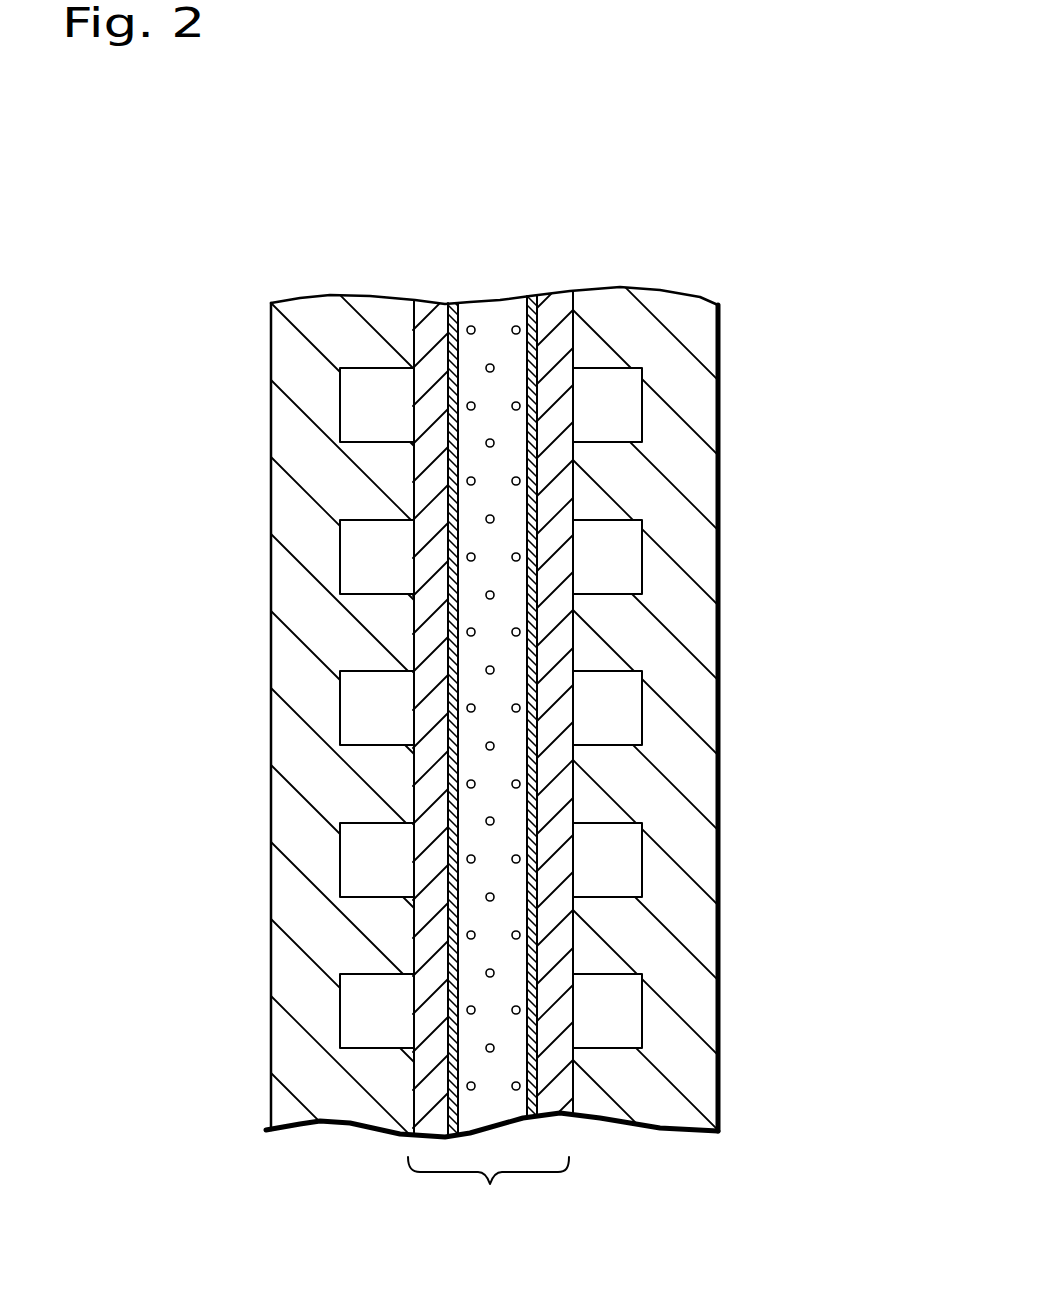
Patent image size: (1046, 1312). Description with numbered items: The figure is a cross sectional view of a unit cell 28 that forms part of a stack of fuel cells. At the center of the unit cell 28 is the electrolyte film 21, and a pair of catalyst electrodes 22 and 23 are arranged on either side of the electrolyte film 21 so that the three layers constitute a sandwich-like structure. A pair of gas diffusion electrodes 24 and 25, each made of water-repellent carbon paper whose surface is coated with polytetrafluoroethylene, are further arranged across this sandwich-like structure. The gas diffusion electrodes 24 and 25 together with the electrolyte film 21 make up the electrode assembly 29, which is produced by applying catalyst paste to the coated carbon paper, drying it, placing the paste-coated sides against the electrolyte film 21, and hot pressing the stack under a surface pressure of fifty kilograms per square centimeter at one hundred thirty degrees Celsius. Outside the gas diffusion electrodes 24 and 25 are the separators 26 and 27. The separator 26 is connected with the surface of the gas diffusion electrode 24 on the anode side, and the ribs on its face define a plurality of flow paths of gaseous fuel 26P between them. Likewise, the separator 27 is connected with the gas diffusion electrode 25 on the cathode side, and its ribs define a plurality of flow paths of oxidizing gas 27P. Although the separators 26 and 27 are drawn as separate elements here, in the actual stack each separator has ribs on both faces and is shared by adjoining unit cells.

The electrolyte film 21 is at (492, 303).
The catalyst electrode 22 is at (533, 298).
The catalyst electrode 23 is at (457, 303).
The gas diffusion electrode 24 is at (558, 295).
The gas diffusion electrode 25 is at (435, 303).
The separator 26 is at (658, 288).
The flow paths of gaseous fuel 26P is at (627, 552).
The separator 27 is at (335, 295).
The flow paths of oxidizing gas 27P is at (355, 552).
The unit cell 28 is at (818, 182).
The electrode assembly 29 is at (488, 1198).